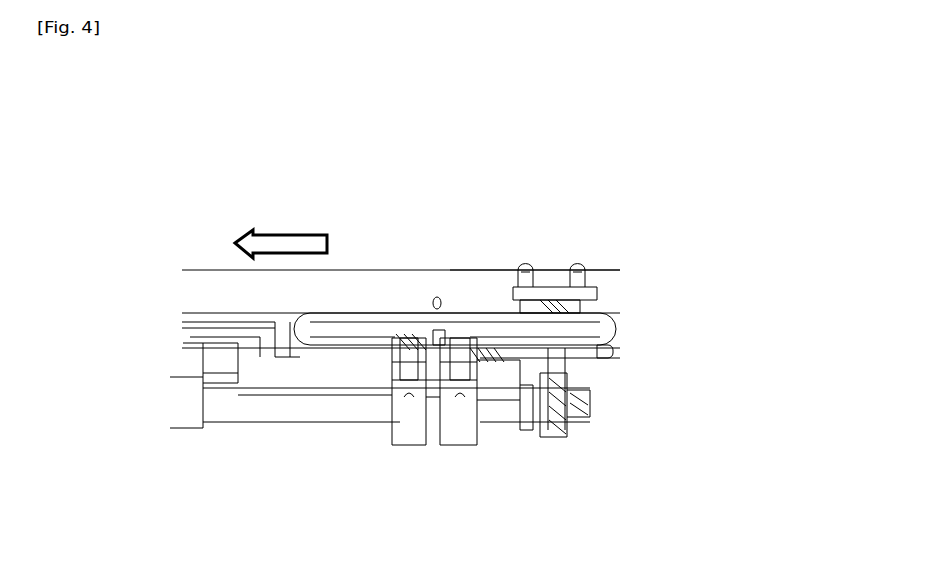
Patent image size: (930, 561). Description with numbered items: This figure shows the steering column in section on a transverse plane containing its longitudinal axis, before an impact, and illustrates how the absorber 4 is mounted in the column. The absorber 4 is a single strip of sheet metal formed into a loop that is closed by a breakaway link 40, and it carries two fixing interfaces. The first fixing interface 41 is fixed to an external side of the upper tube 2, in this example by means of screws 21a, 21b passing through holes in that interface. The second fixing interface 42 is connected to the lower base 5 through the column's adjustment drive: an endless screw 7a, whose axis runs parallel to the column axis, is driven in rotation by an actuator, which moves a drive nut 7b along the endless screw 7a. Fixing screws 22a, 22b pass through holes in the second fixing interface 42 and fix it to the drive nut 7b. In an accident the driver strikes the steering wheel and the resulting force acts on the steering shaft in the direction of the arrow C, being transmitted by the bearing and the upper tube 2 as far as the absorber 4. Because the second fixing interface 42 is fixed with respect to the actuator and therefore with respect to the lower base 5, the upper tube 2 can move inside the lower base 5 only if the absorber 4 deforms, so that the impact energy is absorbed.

The upper tube 2 is at (610, 257).
The absorber 4 is at (605, 347).
The lower base 5 is at (188, 342).
The endless screw 7a is at (238, 413).
The drive nut 7b is at (440, 413).
The screw 21a is at (577, 313).
The screw 21b is at (528, 316).
The fixing screw 22a is at (406, 382).
The fixing screw 22b is at (457, 380).
The breakaway link 40 is at (356, 330).
The first fixing interface 41 is at (552, 300).
The second fixing interface 42 is at (439, 330).
The arrow C is at (275, 246).